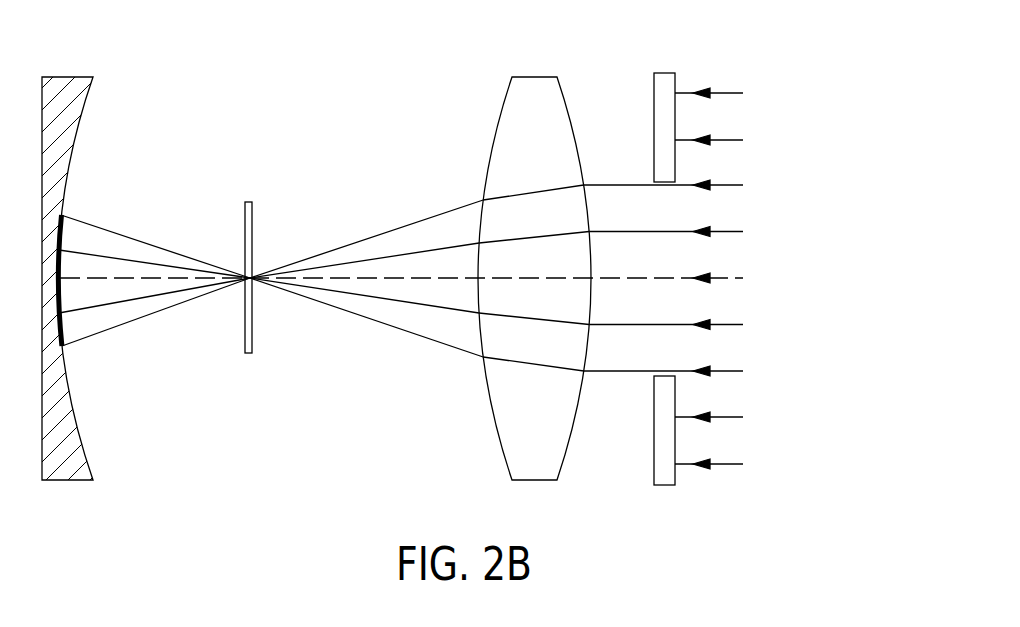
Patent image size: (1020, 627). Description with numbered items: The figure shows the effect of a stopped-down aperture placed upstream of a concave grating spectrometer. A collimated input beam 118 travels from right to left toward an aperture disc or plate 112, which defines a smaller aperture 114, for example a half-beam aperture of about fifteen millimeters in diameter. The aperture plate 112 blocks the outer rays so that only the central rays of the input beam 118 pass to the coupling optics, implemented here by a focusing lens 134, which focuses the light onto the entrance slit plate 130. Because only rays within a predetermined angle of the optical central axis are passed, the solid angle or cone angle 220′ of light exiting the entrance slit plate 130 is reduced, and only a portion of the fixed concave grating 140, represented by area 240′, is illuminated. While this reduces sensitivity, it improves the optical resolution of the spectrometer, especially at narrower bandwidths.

The fixed concave grating 140 is at (68, 77).
The illuminated area of the grating 240′ is at (77, 234).
The cone angle 220′ is at (181, 190).
The entrance slit plate 130 is at (243, 338).
The focusing lens 134 is at (522, 75).
The aperture disc or plate 112 is at (654, 80).
The aperture 114 is at (796, 307).
The input beam 118 is at (796, 119).